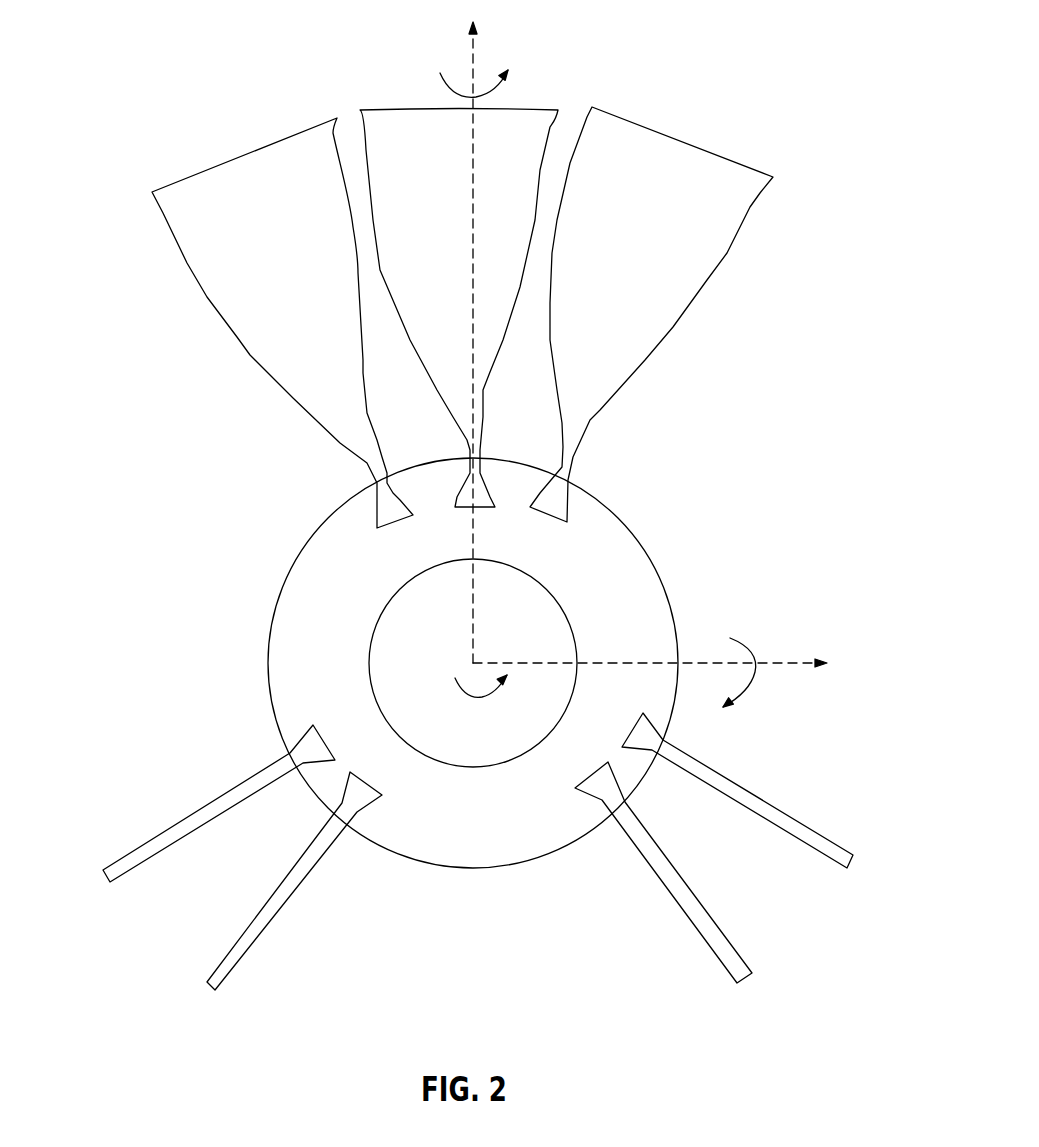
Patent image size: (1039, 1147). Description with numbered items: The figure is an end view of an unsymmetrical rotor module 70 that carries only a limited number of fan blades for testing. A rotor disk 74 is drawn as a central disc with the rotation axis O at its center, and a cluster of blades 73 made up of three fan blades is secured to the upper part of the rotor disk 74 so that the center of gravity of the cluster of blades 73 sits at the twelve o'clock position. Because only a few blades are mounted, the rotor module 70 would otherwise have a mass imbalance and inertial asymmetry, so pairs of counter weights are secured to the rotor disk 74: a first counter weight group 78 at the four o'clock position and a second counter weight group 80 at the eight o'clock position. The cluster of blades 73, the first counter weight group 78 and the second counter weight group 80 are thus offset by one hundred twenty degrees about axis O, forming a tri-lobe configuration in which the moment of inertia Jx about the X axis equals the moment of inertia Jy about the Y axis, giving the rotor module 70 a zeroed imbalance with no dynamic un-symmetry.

The rotor module 70 is at (479, 504).
The cluster of blades 73 is at (462, 283).
The rotor disk 74 is at (620, 540).
The first counter weight group 78 is at (742, 848).
The second counter weight group 80 is at (209, 857).